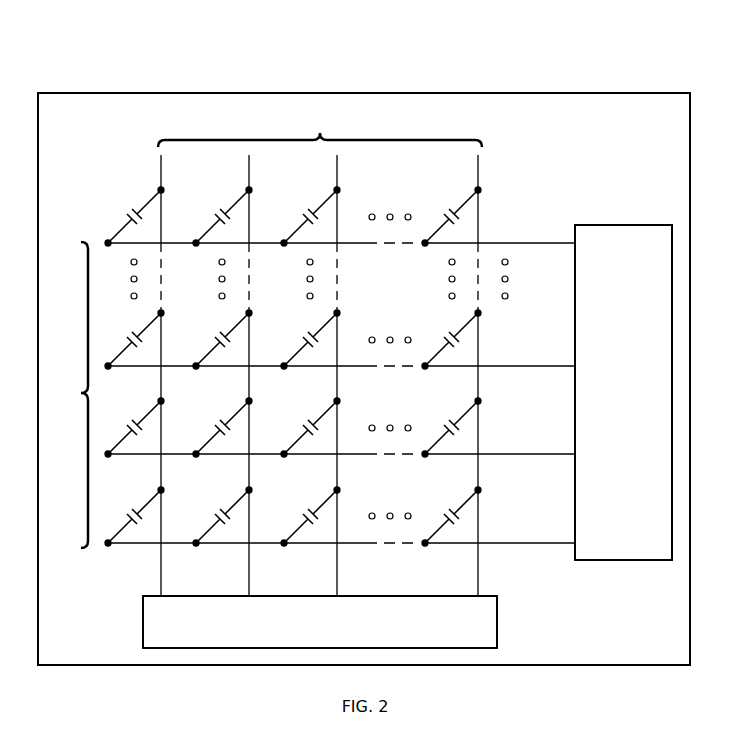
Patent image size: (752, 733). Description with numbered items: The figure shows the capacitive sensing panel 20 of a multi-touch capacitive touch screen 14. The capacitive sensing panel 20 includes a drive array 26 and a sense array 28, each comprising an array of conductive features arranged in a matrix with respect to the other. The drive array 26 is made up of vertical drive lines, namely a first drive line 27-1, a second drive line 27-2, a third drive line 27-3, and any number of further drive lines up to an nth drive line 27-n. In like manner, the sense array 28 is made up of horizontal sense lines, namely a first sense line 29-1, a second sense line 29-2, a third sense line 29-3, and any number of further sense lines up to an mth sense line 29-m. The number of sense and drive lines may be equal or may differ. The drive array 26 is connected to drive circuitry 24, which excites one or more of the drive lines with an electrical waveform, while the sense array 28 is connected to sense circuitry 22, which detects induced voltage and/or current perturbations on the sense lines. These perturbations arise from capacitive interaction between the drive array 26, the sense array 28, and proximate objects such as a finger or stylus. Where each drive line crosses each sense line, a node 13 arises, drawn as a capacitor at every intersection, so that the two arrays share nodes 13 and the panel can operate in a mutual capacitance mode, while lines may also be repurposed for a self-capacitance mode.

The node 13 is at (163, 241).
The multi-touch capacitive touch screen 14 is at (487, 58).
The capacitive sensing panel 20 is at (222, 92).
The sense circuitry 22 is at (613, 428).
The drive circuitry 24 is at (141, 620).
The drive array 26 is at (320, 128).
The first drive line 27-1 is at (159, 169).
The second drive line 27-2 is at (247, 169).
The third drive line 27-3 is at (335, 169).
The nth drive line 27-n is at (480, 169).
The sense array 28 is at (72, 395).
The first sense line 29-1 is at (525, 545).
The second sense line 29-2 is at (525, 456).
The third sense line 29-3 is at (525, 368).
The mth sense line 29-m is at (525, 245).